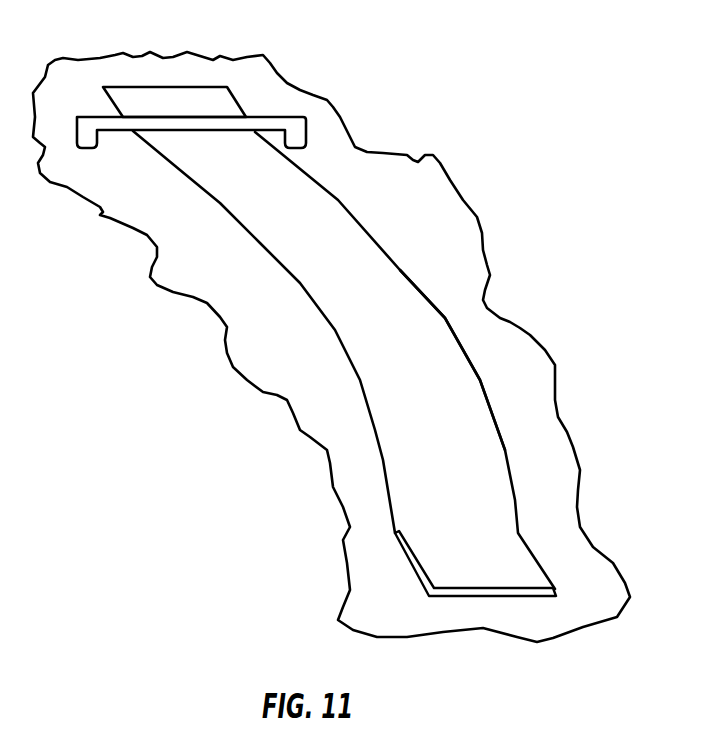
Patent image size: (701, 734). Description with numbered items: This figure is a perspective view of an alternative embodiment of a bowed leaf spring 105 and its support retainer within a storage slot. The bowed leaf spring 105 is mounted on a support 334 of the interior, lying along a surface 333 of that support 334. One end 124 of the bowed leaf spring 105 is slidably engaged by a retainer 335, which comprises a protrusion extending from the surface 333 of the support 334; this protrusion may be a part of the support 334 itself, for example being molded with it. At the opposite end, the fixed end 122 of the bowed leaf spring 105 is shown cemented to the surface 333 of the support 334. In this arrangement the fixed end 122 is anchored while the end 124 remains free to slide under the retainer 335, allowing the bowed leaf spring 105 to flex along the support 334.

The end of bowed leaf spring 124 is at (190, 108).
The retainer 335 is at (306, 127).
The surface 333 is at (333, 162).
The support 334 is at (140, 252).
The bowed leaf spring 105 is at (448, 318).
The fixed end 122 is at (478, 571).